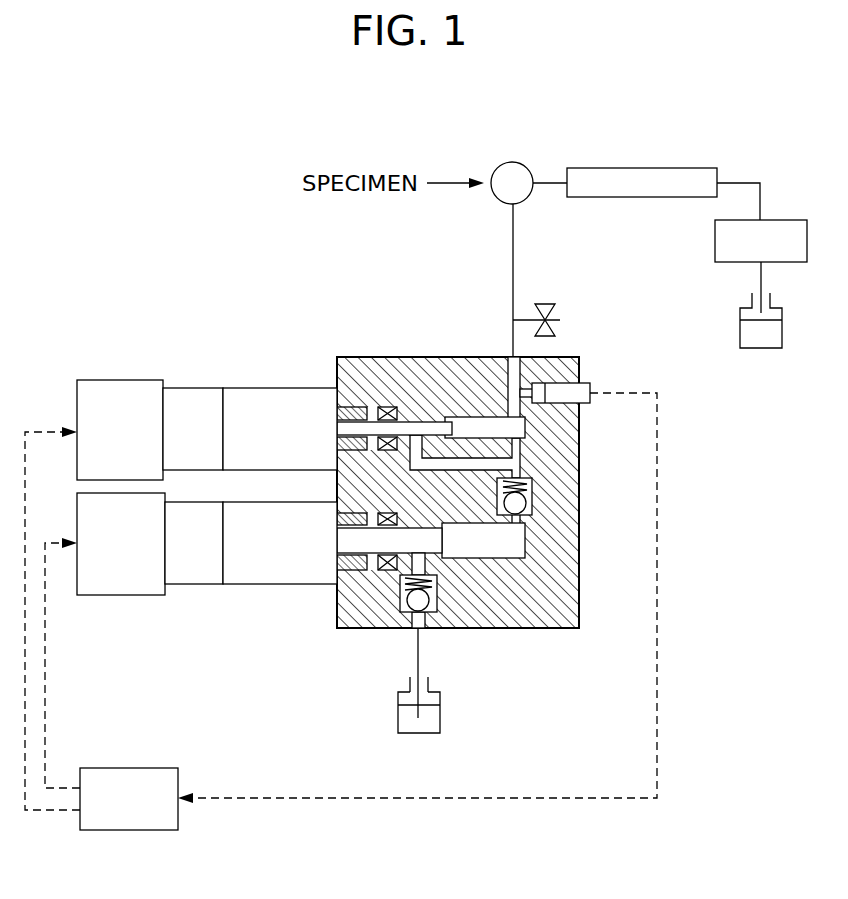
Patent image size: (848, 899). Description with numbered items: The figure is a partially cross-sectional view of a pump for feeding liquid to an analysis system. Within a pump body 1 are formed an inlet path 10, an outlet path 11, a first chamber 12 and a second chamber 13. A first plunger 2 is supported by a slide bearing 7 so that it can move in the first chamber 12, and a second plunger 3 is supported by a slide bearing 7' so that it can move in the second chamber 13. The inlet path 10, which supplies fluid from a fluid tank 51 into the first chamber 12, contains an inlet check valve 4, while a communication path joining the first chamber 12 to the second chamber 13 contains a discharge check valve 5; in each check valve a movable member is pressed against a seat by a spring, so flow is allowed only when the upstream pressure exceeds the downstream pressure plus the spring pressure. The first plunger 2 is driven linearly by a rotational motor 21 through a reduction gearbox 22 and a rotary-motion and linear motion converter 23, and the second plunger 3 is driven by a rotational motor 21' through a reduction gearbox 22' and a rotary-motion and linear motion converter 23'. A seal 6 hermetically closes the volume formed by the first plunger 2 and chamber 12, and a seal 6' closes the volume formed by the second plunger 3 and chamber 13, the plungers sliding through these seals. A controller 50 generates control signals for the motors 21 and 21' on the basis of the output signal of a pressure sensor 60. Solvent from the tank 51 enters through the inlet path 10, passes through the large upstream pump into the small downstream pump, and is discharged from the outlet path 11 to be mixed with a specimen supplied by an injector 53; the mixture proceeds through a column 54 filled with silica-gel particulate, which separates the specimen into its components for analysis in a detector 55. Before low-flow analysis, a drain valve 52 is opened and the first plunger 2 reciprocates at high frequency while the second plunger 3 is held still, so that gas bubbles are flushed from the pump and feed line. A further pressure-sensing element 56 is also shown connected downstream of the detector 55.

The pump body 1 is at (558, 627).
The first plunger 2 is at (512, 556).
The second plunger 3 is at (432, 428).
The inlet check valve 4 is at (447, 611).
The discharge check valve 5 is at (532, 497).
The seal 6 is at (376, 591).
The seal 6' is at (388, 384).
The slide bearing 7 is at (339, 584).
The slide bearing 7' is at (352, 384).
The inlet path 10 is at (425, 632).
The outlet path 11 is at (503, 357).
The first chamber 12 is at (520, 540).
The second chamber 13 is at (520, 428).
The rotational motor 21 is at (121, 571).
The rotational motor 21' is at (120, 403).
The reduction gearbox 22 is at (194, 571).
The reduction gearbox 22' is at (193, 404).
The rotary-motion and linear motion converter 23 is at (280, 571).
The rotary-motion and linear motion converter 23' is at (280, 404).
The controller 50 is at (100, 831).
The fluid tank 51 is at (398, 722).
The drain valve 52 is at (556, 302).
The injector 53 is at (513, 162).
The column 54 is at (642, 168).
The detector 55 is at (715, 243).
The pressure sensor 56 is at (760, 349).
The pressure sensor 60 is at (590, 388).